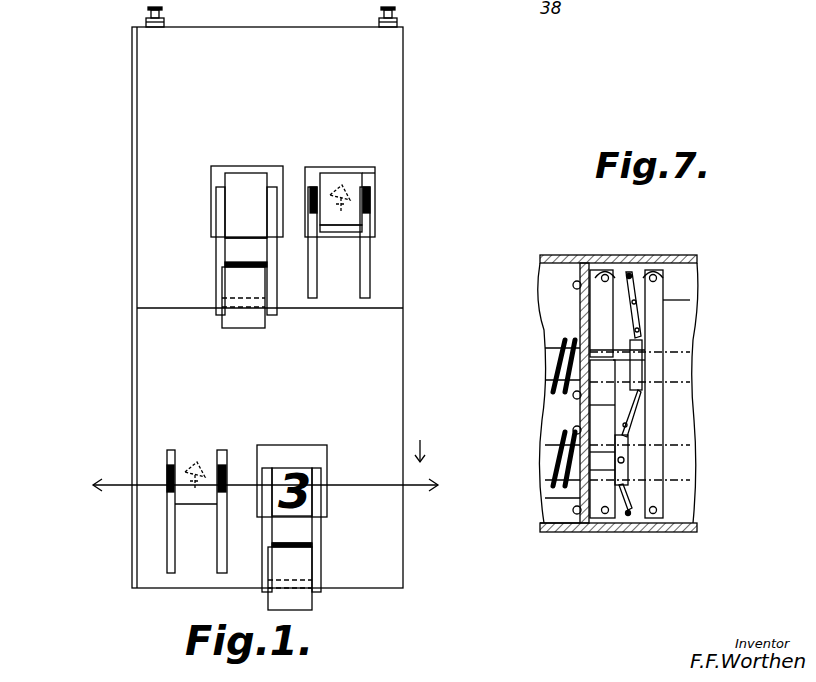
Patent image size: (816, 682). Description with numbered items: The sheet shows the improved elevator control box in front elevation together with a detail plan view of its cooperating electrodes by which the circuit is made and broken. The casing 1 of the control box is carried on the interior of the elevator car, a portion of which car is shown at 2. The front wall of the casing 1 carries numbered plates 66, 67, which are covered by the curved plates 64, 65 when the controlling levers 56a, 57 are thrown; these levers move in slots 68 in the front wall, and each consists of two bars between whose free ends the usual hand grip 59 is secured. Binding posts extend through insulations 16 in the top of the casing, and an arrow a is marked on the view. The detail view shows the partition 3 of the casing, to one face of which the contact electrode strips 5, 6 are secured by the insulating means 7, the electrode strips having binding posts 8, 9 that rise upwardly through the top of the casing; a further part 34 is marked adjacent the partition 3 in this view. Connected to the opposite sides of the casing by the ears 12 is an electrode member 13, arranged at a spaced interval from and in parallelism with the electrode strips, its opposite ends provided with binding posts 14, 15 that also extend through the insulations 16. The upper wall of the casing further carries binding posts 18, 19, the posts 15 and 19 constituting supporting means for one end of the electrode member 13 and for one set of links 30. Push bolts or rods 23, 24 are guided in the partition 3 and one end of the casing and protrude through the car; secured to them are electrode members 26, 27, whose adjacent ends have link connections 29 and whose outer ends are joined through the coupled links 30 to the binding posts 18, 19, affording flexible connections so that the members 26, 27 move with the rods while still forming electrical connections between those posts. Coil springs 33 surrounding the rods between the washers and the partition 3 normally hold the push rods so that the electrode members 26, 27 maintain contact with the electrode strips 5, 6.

In FIG. 1, the casing 1 is at (403, 150).
In FIG. 7, the casing 1 is at (590, 532).
In FIG. 1, the elevator car 2 is at (261, 486).
In FIG. 1, the direction arrow a is at (430, 448).
In FIG. 1, the insulations 16 is at (164, 24).
In FIG. 1, the numbered plate 66 is at (238, 166).
In FIG. 1, the numbered plate 67 is at (312, 166).
In FIG. 1, the curved plate 65 is at (357, 166).
In FIG. 1, the controlling lever 57 is at (370, 205).
In FIG. 1, the slots 68 is at (216, 277).
In FIG. 1, the controlling lever 56a is at (115, 505).
In FIG. 1, the hand grip 59 is at (240, 320).
In FIG. 1, the curved plate 64 is at (250, 272).
In FIG. 7, the partition 3 is at (584, 263).
In FIG. 7, the binding post 8 is at (600, 270).
In FIG. 7, the member A is at (603, 330).
In FIG. 7, the binding post 18 is at (629, 272).
In FIG. 7, the binding post 14 is at (654, 270).
In FIG. 7, the ears 12 is at (690, 263).
In FIG. 7, the insulating means 7 is at (573, 285).
In FIG. 7, the stop 34 is at (577, 300).
In FIG. 7, the electrode member 13 is at (663, 300).
In FIG. 7, the coupled links 30 is at (637, 320).
In FIG. 7, the electrode member 26 is at (642, 375).
In FIG. 7, the push bolt or rod 24 is at (553, 365).
In FIG. 7, the link connections 29 is at (641, 400).
In FIG. 7, the contact electrode strip 5 is at (603, 405).
In FIG. 7, the push bolt or rod 23 is at (553, 462).
In FIG. 7, the electrode member 27 is at (628, 455).
In FIG. 7, the coil springs 33 is at (555, 492).
In FIG. 7, the contact electrode strip 6 is at (578, 532).
In FIG. 7, the binding post 9 is at (605, 518).
In FIG. 7, the binding post 19 is at (628, 518).
In FIG. 7, the binding post 15 is at (655, 518).